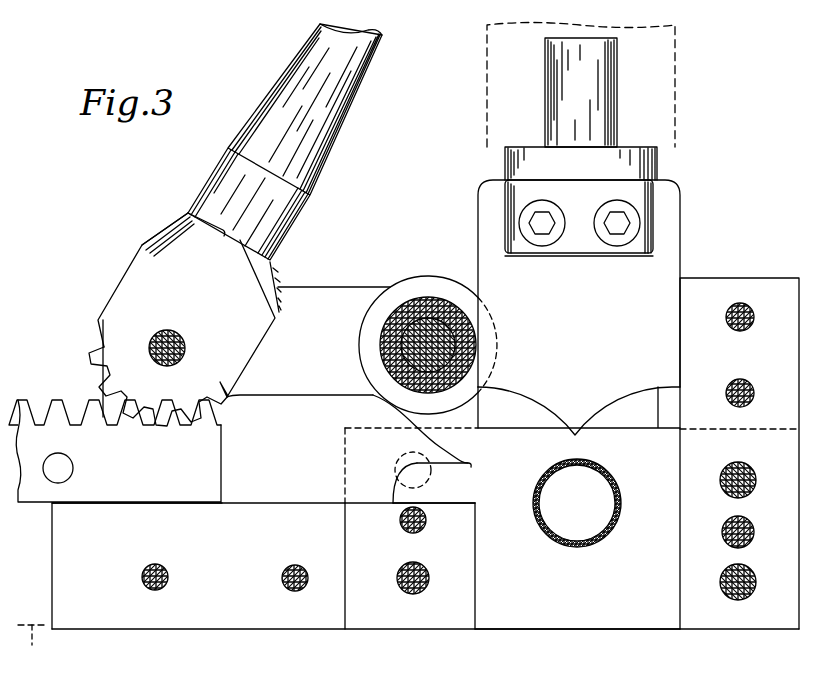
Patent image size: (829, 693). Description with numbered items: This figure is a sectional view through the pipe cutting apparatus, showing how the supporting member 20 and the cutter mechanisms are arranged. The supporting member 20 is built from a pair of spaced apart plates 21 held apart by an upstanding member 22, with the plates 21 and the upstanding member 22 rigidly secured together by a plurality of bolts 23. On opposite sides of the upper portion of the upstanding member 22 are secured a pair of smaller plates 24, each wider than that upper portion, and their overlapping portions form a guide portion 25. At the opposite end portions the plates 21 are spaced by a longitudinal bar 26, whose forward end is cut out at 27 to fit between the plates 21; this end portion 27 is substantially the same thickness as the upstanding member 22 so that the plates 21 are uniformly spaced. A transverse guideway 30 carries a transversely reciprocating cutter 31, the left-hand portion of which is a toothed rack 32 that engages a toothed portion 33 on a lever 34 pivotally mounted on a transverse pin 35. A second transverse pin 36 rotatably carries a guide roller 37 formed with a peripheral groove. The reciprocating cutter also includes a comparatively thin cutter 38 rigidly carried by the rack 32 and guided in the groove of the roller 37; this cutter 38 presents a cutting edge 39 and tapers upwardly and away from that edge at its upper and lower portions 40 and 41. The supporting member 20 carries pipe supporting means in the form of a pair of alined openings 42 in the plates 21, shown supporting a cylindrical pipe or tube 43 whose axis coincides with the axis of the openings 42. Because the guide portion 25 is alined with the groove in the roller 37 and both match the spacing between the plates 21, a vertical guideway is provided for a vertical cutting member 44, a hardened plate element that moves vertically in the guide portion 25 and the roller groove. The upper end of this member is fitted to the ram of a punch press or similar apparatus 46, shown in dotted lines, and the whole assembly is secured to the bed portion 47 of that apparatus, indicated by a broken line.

The supporting member 20 is at (573, 636).
The plates 21 is at (505, 632).
The upstanding member 22 is at (742, 628).
The bolts 23 is at (722, 478).
The smaller plates 24 is at (668, 414).
The guide portion 25 is at (681, 270).
The longitudinal bar 26 is at (278, 621).
The cut out forward end 27 is at (418, 622).
The transverse guideway 30 is at (270, 496).
The transversely reciprocating cutter 31 is at (125, 496).
The toothed rack 32 is at (60, 400).
The toothed portion 33 is at (94, 352).
The lever 34 is at (271, 90).
The transverse pin 35 is at (182, 352).
The transverse pin 36 is at (432, 330).
The guide roller 37 is at (394, 284).
The cutter 38 is at (367, 504).
The cutting edge 39 is at (471, 467).
The upper tapered portion 40 is at (446, 443).
The lower tapered portion 41 is at (425, 478).
The alined openings 42 is at (571, 547).
The cylindrical pipe or tube 43 is at (611, 522).
The vertical cutting member 44 is at (681, 206).
The punch press or similar apparatus 46 is at (675, 80).
The bed portion 47 is at (32, 640).